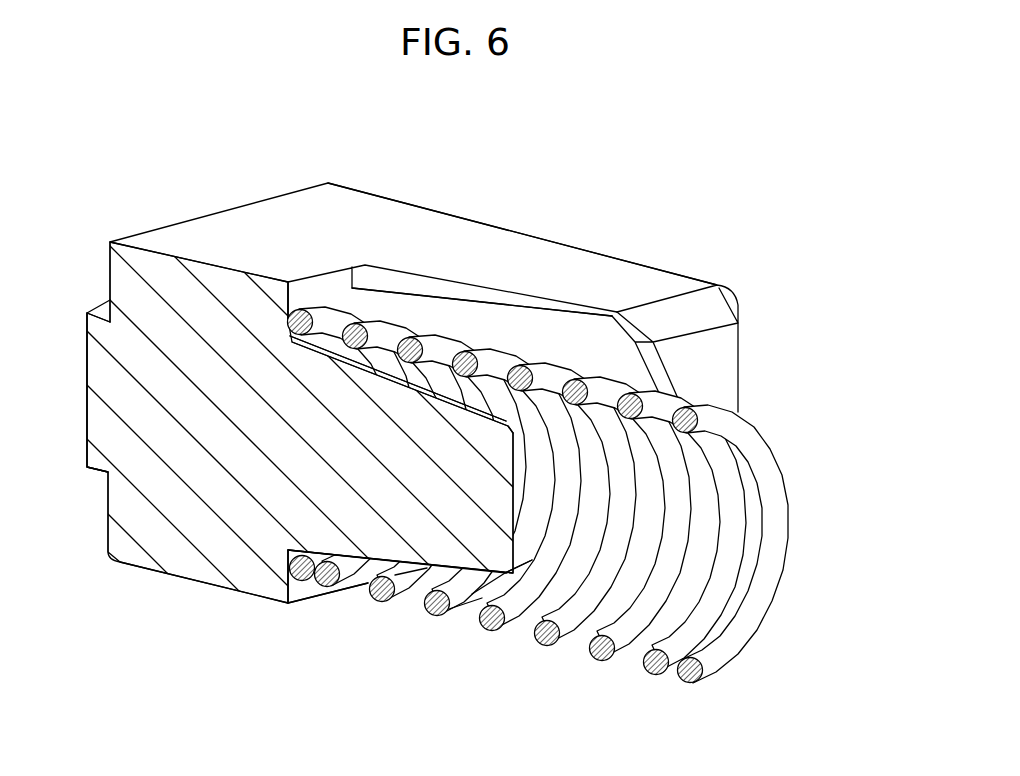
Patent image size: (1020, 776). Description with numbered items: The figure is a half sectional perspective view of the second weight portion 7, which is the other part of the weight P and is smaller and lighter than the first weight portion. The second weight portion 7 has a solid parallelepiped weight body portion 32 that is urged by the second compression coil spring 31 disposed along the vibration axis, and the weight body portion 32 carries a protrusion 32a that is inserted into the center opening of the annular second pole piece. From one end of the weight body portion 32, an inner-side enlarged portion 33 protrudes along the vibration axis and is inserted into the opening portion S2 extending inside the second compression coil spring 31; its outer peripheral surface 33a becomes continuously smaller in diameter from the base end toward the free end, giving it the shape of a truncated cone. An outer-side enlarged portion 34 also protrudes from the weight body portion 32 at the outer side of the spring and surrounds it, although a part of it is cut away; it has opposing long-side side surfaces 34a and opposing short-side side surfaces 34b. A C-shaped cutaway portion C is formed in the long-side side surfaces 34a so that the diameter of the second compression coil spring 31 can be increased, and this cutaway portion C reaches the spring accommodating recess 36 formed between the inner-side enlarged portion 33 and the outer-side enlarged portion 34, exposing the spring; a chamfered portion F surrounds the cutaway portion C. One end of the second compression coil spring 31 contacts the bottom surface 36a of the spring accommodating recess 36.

The second weight portion 7 is at (622, 140).
The weight P is at (413, 180).
The second compression coil spring 31 is at (535, 646).
The weight body portion 32 is at (200, 568).
The protrusion 32a is at (87, 450).
The inner-side enlarged portion 33 is at (417, 545).
The outer peripheral surface 33a is at (458, 612).
The outer-side enlarged portion 34 is at (667, 267).
The long-side side surfaces 34a is at (592, 272).
The short-side side surfaces 34b is at (742, 372).
The spring accommodating recess 36 is at (426, 308).
The bottom surface 36a is at (303, 590).
The cutaway portion C is at (466, 279).
The chamfered portion F is at (528, 302).
The opening portion S2 is at (710, 553).